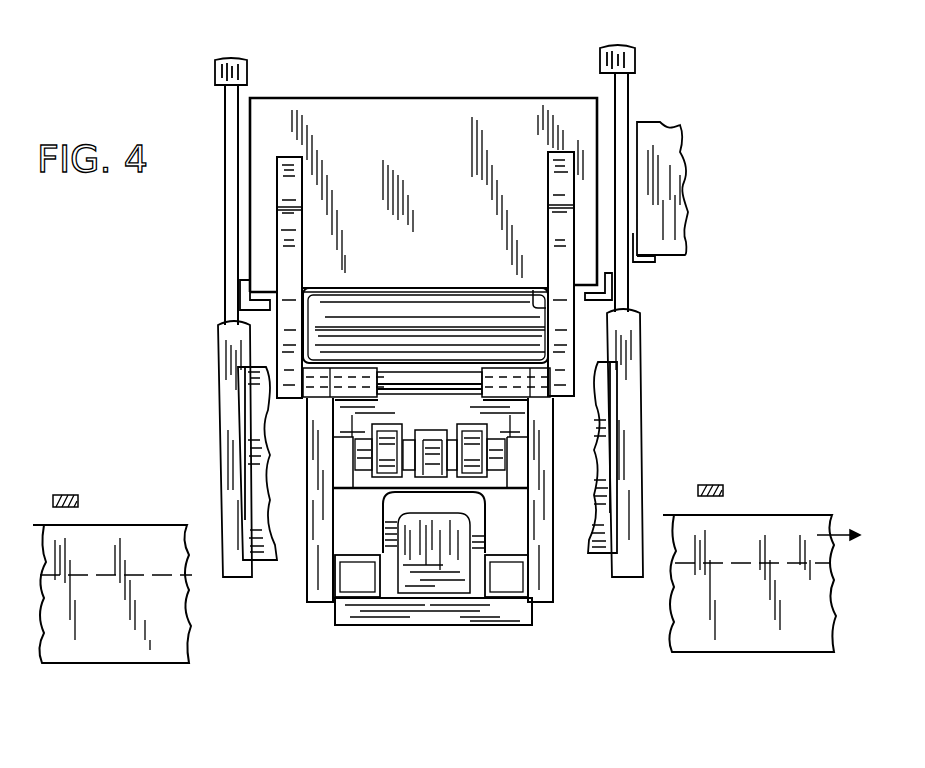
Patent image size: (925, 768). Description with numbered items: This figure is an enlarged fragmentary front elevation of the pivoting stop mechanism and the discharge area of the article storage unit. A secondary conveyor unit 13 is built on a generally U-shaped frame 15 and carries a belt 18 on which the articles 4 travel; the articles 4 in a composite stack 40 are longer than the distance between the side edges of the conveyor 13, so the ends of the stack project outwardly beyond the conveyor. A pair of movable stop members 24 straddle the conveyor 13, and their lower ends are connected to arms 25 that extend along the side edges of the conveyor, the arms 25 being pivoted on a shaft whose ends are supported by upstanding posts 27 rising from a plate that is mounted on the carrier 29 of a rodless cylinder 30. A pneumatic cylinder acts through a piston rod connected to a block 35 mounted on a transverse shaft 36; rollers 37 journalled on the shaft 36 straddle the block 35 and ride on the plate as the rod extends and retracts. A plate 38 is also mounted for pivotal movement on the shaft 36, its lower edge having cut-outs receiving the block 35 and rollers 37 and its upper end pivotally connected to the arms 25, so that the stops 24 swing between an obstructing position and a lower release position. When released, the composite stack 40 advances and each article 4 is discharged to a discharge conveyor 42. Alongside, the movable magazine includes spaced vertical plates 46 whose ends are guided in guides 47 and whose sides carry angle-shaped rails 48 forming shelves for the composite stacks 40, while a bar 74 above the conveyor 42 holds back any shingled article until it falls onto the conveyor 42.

The articles 4 is at (388, 110).
The secondary conveyor unit 13 is at (469, 282).
The U-shaped frame 15 is at (538, 297).
The belt 18 is at (407, 295).
The stop members 24 is at (294, 237).
The arms 25 is at (318, 394).
The upstanding posts 27 is at (335, 464).
The carrier 29 is at (470, 540).
The rodless cylinder 30 is at (422, 550).
The block 35 is at (418, 431).
The transverse shaft 36 is at (514, 452).
The rollers 37 is at (380, 478).
The plate 38 is at (540, 404).
The composite stack 40 is at (667, 145).
The discharge conveyor 42 is at (136, 518).
The vertical plates 46 is at (232, 305).
The guides 47 is at (215, 68).
The angle-shaped rails 48 is at (245, 280).
The bar 74 is at (68, 495).